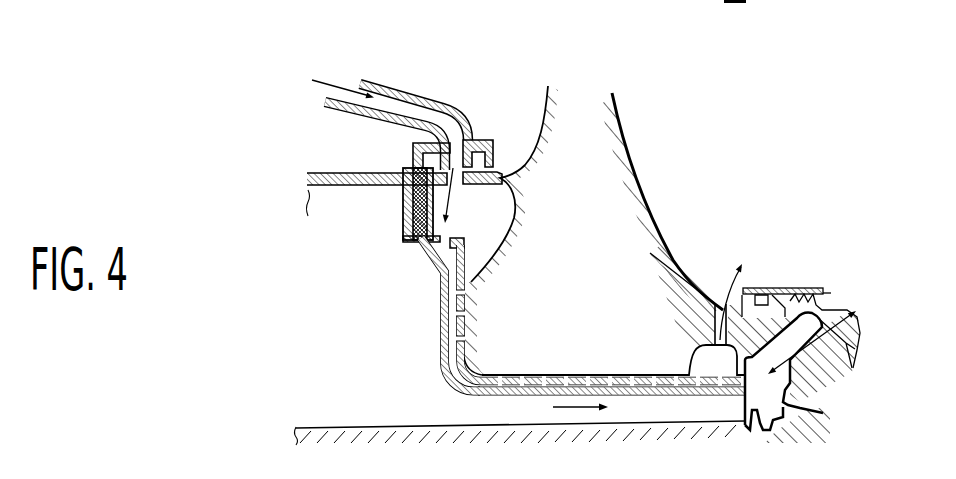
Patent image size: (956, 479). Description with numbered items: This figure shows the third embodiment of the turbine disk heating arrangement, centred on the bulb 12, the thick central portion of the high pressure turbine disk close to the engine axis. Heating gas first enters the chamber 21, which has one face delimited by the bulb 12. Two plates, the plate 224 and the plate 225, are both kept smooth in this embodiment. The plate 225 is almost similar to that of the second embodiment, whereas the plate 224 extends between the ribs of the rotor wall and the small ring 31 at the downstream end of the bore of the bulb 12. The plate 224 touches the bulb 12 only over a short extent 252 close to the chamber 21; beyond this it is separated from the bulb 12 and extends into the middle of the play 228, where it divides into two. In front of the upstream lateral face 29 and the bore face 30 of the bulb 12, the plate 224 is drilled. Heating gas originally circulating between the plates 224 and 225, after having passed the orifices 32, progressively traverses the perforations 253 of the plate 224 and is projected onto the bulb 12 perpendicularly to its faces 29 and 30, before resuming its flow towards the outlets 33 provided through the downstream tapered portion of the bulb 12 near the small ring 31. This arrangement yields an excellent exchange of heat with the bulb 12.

The bulb 12 is at (613, 227).
The chamber 21 is at (489, 204).
The upstream lateral face 29 is at (457, 320).
The bore face 30 is at (620, 375).
The small ring 31 is at (750, 400).
The orifices 32 is at (447, 224).
The orifices 33 is at (721, 312).
The plate 224 is at (465, 250).
The plate 225 is at (437, 263).
The play 228 is at (443, 386).
The extent 252 is at (463, 290).
The perforations 253 is at (539, 397).